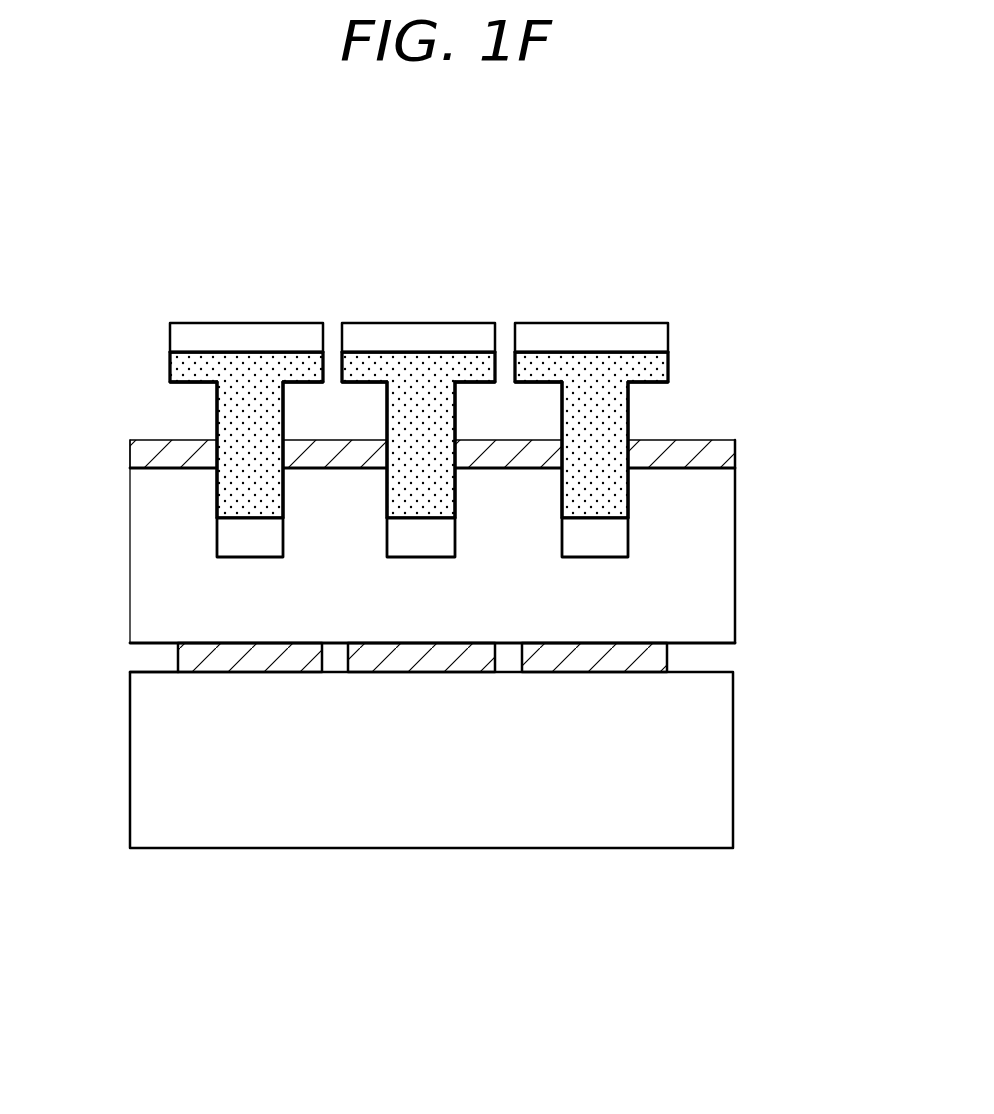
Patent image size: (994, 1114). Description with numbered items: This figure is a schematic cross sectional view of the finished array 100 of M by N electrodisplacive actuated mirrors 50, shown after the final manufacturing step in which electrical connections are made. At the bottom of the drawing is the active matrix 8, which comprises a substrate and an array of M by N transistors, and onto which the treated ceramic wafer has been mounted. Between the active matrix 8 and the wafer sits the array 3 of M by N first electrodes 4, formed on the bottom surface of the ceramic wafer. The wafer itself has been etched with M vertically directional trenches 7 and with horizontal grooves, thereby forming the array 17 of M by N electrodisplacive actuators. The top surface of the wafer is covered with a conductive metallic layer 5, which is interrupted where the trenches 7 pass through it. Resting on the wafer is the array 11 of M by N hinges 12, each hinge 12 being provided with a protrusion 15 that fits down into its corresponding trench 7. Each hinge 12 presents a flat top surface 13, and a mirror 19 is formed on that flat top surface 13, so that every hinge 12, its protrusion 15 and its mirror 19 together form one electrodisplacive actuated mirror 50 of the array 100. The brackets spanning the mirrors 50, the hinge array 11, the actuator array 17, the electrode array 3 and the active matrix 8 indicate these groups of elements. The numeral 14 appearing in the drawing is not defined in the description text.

The array of M×N electrodisplacive actuated mirrors 100 is at (667, 155).
The electrodisplacive actuated mirror 50 is at (170, 242).
The mirror 19 is at (548, 337).
The flat top surface 13 is at (572, 350).
The hinge 12 is at (598, 373).
The gate head portion 14 is at (645, 388).
The protrusion 15 is at (602, 415).
The conductive metallic layer 5 is at (720, 460).
The array of M×N hinges 11 is at (800, 375).
The array of M×N electrodisplacive actuators 17 is at (107, 440).
The array of M×N first electrodes 3 is at (738, 643).
The first electrode 4 is at (177, 657).
The active matrix 8 is at (783, 683).
The trench 7 is at (405, 542).